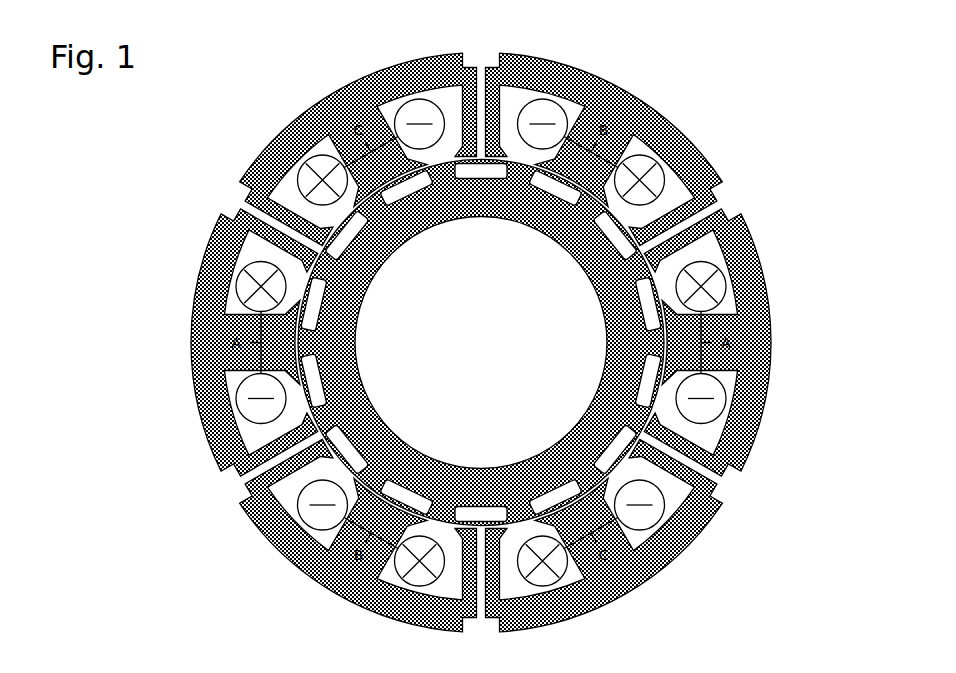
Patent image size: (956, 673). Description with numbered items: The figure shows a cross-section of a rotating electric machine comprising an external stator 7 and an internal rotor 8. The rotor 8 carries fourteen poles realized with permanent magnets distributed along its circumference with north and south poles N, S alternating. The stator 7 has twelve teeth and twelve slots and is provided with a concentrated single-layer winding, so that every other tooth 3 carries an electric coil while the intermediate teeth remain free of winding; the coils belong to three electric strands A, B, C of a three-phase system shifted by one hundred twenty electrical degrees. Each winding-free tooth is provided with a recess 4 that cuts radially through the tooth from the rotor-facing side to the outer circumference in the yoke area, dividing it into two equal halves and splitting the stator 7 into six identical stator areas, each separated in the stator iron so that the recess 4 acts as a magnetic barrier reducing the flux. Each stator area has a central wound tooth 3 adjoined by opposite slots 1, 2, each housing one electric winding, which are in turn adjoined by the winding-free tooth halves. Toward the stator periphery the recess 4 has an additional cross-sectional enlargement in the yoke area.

The slot 1 is at (719, 267).
The slot 2 is at (728, 392).
The tooth 3 is at (530, 322).
The recess 4 is at (692, 216).
The stator 7 is at (541, 80).
The rotor 8 is at (489, 220).